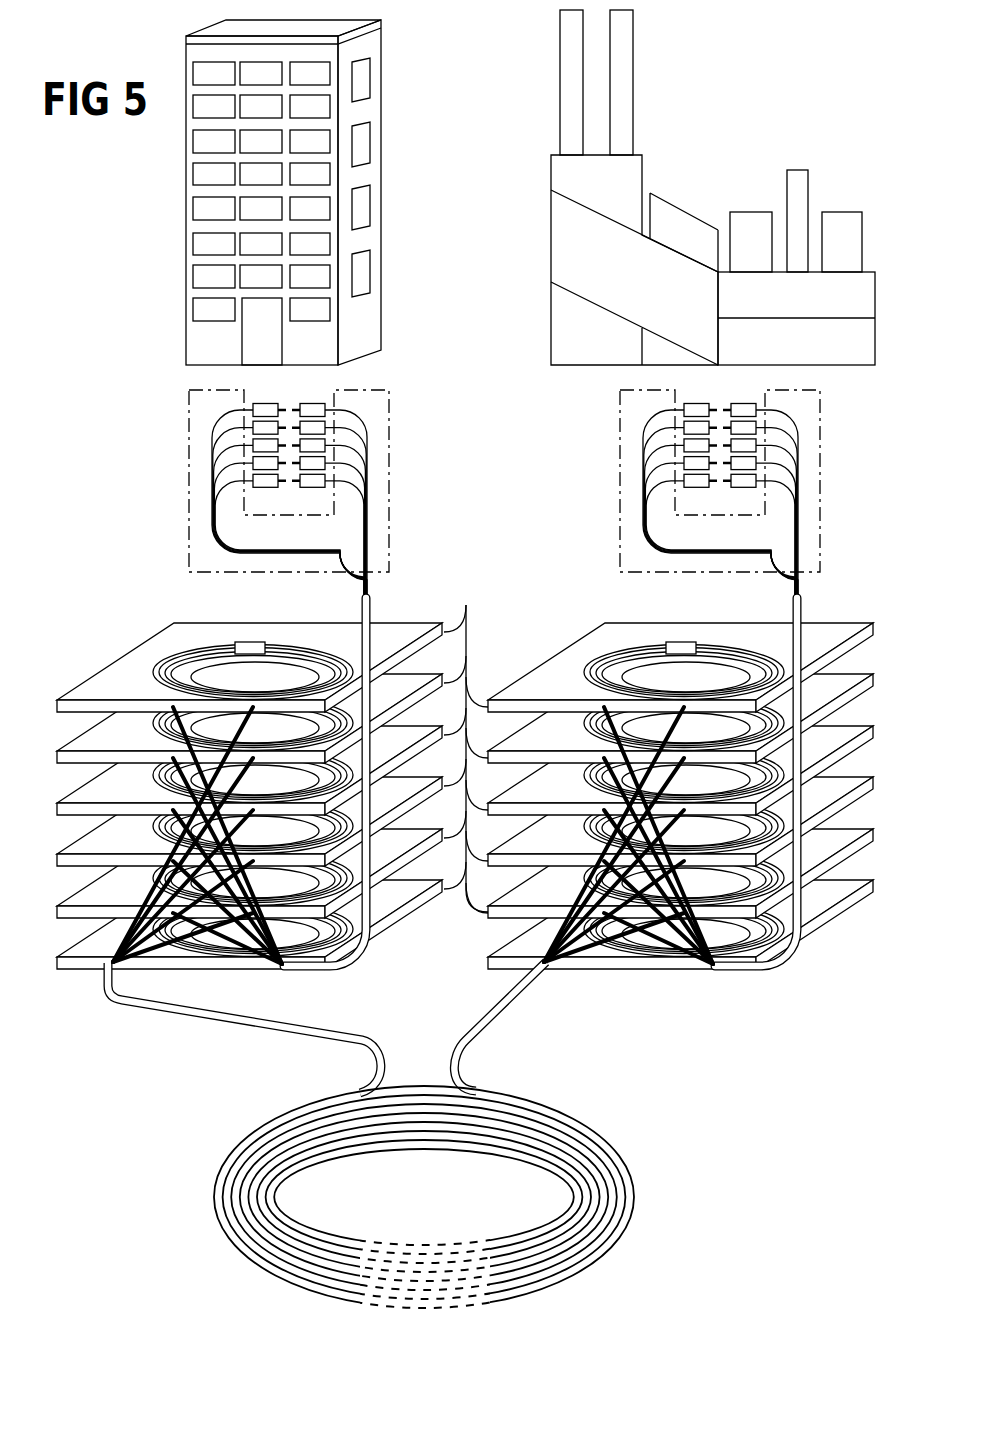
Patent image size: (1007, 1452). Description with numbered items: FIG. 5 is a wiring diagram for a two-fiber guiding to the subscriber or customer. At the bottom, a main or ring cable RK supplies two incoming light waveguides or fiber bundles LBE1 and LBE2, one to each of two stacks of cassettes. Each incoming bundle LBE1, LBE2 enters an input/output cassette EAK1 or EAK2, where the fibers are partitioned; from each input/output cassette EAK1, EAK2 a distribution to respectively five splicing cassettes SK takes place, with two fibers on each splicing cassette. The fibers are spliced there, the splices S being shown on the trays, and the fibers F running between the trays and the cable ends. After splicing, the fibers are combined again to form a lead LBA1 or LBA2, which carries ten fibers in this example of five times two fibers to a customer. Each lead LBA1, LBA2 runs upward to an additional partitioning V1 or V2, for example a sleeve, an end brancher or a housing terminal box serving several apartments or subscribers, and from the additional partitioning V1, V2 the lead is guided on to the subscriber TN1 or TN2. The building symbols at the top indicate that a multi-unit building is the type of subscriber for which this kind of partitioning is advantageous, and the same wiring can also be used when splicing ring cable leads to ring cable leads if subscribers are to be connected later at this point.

The additional partitioning V1 is at (820, 417).
The additional partitioning V2 is at (389, 417).
The subscriber TN1 is at (681, 452).
The subscriber TN2 is at (250, 452).
The lead LBA1 is at (808, 606).
The lead LBA2 is at (375, 598).
The splicing cassettes SK is at (466, 742).
The splice S is at (243, 641).
The optical fibers F is at (140, 888).
The input/output cassette EAK1 is at (814, 932).
The input/output cassette EAK2 is at (383, 932).
The incoming light waveguide or fiber bundle LBE1 is at (502, 1012).
The incoming light waveguide or fiber bundle LBE2 is at (168, 1012).
The ring cable RK is at (634, 1193).